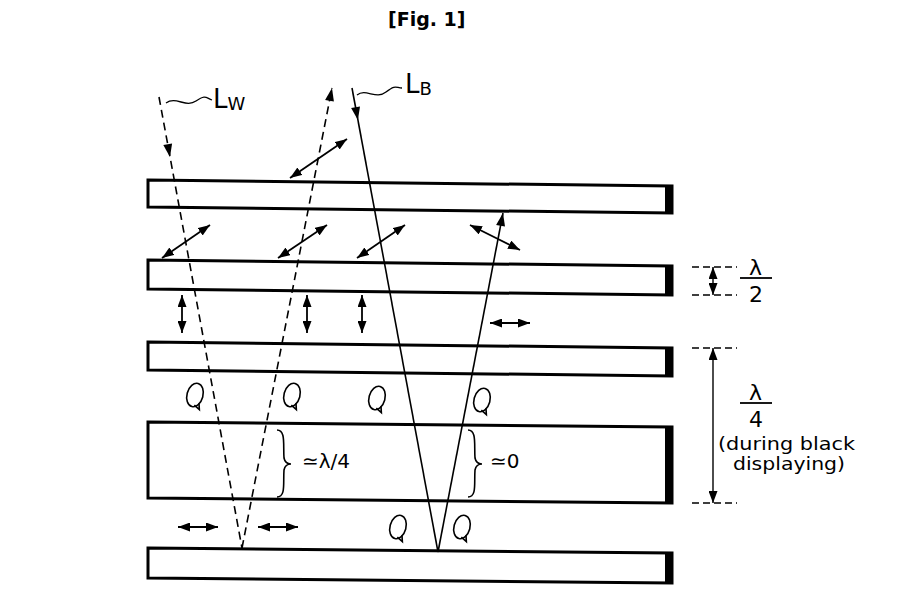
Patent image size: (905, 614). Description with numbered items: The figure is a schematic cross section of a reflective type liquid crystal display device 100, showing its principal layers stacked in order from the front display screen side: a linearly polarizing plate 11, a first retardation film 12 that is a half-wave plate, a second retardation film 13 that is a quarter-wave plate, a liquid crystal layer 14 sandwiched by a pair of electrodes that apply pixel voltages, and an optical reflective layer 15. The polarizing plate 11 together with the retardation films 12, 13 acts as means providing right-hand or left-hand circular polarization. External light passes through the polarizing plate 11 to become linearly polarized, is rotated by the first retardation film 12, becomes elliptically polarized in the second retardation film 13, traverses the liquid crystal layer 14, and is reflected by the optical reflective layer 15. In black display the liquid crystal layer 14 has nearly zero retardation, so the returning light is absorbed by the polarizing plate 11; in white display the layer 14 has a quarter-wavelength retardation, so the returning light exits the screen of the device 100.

The liquid crystal display device 100 is at (90, 125).
The linearly polarizing plate 11 is at (147, 192).
The first retardation film 12 is at (147, 272).
The second retardation film 13 is at (147, 352).
The liquid crystal layer 14 is at (147, 453).
The optical reflective layer 15 is at (147, 557).